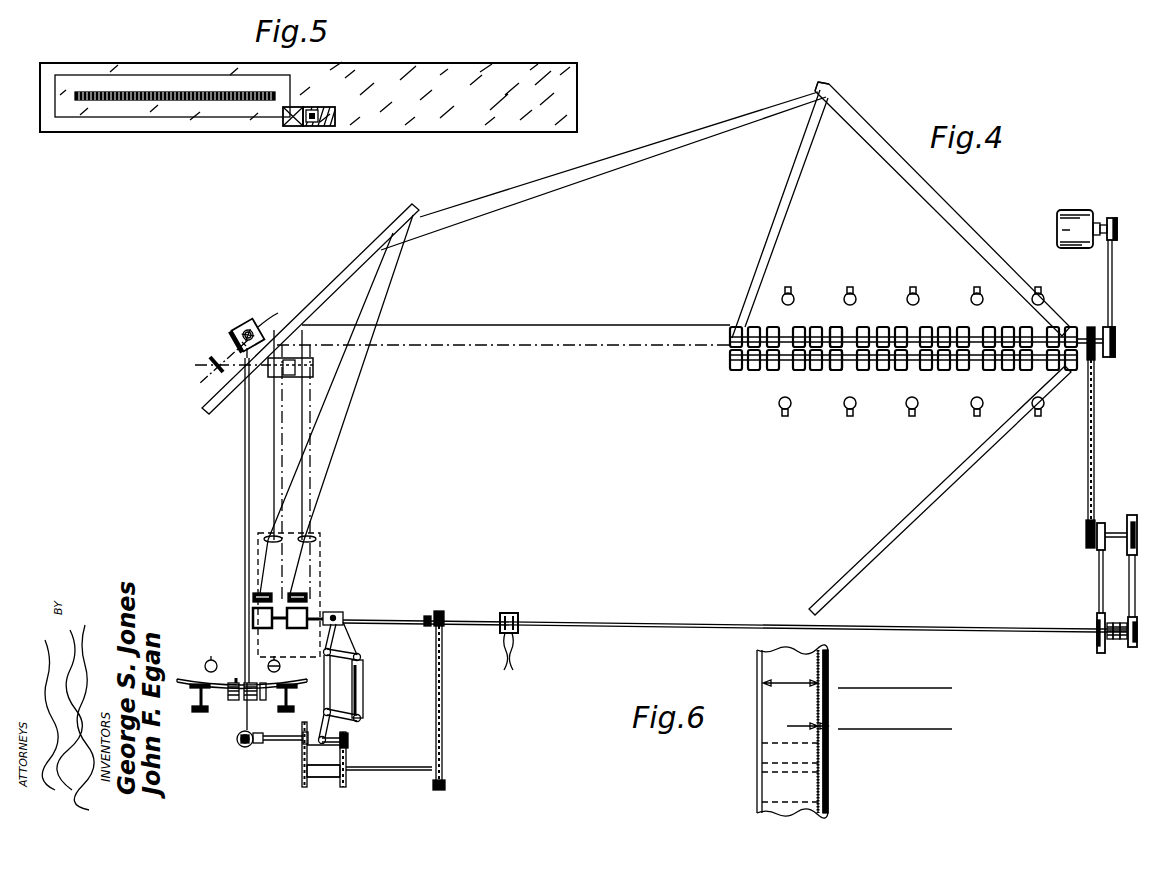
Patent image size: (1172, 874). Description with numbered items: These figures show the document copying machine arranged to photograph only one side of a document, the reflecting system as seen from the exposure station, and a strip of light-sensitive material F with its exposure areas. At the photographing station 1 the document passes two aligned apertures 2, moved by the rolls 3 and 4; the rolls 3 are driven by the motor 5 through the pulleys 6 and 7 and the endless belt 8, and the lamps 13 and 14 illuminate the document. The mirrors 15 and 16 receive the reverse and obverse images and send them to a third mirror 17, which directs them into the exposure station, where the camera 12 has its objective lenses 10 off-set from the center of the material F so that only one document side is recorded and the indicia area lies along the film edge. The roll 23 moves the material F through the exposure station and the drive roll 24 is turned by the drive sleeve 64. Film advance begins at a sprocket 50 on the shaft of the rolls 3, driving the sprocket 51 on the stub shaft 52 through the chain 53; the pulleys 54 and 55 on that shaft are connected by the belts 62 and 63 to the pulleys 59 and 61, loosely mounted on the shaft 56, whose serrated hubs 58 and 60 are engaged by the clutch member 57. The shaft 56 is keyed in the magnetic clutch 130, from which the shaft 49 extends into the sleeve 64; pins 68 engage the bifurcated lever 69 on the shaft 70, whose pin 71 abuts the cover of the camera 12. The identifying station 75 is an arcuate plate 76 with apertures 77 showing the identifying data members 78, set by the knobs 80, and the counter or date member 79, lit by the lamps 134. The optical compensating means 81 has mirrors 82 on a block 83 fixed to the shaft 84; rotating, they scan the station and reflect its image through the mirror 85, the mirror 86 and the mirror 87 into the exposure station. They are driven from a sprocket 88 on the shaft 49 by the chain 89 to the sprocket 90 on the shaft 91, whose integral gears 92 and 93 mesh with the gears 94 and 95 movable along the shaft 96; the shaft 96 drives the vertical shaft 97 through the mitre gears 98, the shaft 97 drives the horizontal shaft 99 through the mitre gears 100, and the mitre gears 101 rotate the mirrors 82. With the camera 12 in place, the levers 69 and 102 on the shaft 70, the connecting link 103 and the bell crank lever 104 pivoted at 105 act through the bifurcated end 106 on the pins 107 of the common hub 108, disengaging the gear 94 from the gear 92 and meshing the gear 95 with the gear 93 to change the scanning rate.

In FIG. 4, the photographing station 1 is at (877, 324).
In FIG. 5, the apertures 2 is at (112, 102).
In FIG. 4, the rolls 3 is at (832, 326).
In FIG. 4, the rolls 4 is at (836, 372).
In FIG. 4, the motor 5 is at (1057, 228).
In FIG. 4, the pulley 6 is at (1110, 218).
In FIG. 4, the pulley 7 is at (1117, 342).
In FIG. 4, the endless belt 8 is at (1108, 272).
In FIG. 4, the objective lenses 10 is at (310, 540).
In FIG. 4, the camera 12 is at (320, 572).
In FIG. 4, the lamps 13 is at (971, 300).
In FIG. 4, the lamps 14 is at (971, 404).
In FIG. 4, the mirror 15 is at (943, 480).
In FIG. 5, the mirror 16 is at (185, 117).
In FIG. 4, the mirror 16 is at (962, 230).
In FIG. 5, the third mirror 17 is at (450, 67).
In FIG. 4, the third mirror 17 is at (370, 252).
In FIG. 4, the roll 23 is at (307, 594).
In FIG. 4, the drive roll 24 is at (286, 628).
In FIG. 4, the shaft 49 is at (394, 620).
In FIG. 4, the sprocket 50 is at (1090, 327).
In FIG. 4, the sprocket 51 is at (1085, 550).
In FIG. 4, the stub shaft 52 is at (1120, 530).
In FIG. 4, the chain 53 is at (1088, 440).
In FIG. 4, the pulley 54 is at (1097, 558).
In FIG. 4, the pulley 55 is at (1136, 530).
In FIG. 4, the shaft 56 is at (1061, 632).
In FIG. 4, the clutch member 57 is at (1118, 642).
In FIG. 4, the serrated hub 58 is at (1110, 646).
In FIG. 4, the pulley 59 is at (1097, 654).
In FIG. 4, the serrated hub 60 is at (1124, 644).
In FIG. 4, the pulley 61 is at (1137, 633).
In FIG. 4, the belt 62 is at (1098, 605).
In FIG. 4, the belt 63 is at (1134, 593).
In FIG. 4, the drive sleeve 64 is at (333, 618).
In FIG. 4, the pins 68 is at (346, 622).
In FIG. 4, the bifurcated lever 69 is at (359, 655).
In FIG. 4, the shaft 70 is at (326, 664).
In FIG. 4, the pin 71 is at (320, 630).
In FIG. 4, the identifying station 75 is at (188, 674).
In FIG. 4, the arcuate plate 76 is at (334, 708).
In FIG. 4, the apertures 77 is at (236, 683).
In FIG. 4, the identifying data members 78 is at (290, 692).
In FIG. 4, the counter or date member 79 is at (232, 699).
In FIG. 4, the knobs 80 is at (284, 712).
In FIG. 4, the optical compensating means 81 is at (241, 317).
In FIG. 4, the mirrors 82 is at (268, 321).
In FIG. 4, the plate or block 83 is at (250, 321).
In FIG. 4, the shaft 84 is at (234, 328).
In FIG. 4, the mirror 85 is at (210, 372).
In FIG. 5, the mirror 86 is at (293, 124).
In FIG. 4, the mirror 86 is at (300, 376).
In FIG. 5, the mirror 87 is at (330, 126).
In FIG. 4, the mirror 87 is at (313, 366).
In FIG. 4, the sprocket 88 is at (440, 612).
In FIG. 4, the chain 89 is at (444, 716).
In FIG. 4, the sprocket 90 is at (446, 790).
In FIG. 4, the shaft 91 is at (392, 771).
In FIG. 4, the gear 92 is at (346, 784).
In FIG. 4, the gear 93 is at (305, 784).
In FIG. 4, the gear 94 is at (342, 740).
In FIG. 4, the gear 95 is at (304, 736).
In FIG. 4, the shaft 96 is at (274, 742).
In FIG. 4, the vertical shaft 97 is at (246, 745).
In FIG. 4, the mitre gears 98 is at (240, 744).
In FIG. 4, the horizontal shaft 99 is at (245, 487).
In FIG. 4, the mitre gears 100 is at (236, 740).
In FIG. 4, the mitre gears 101 is at (238, 342).
In FIG. 4, the lever 102 is at (363, 674).
In FIG. 4, the connecting link 103 is at (363, 692).
In FIG. 4, the bell crank lever 104 is at (363, 714).
In FIG. 4, the pivot 105 is at (327, 730).
In FIG. 4, the bifurcated end 106 is at (348, 743).
In FIG. 4, the pins 107 is at (324, 776).
In FIG. 4, the common hub 108 is at (288, 702).
In FIG. 4, the magnetic clutch 130 is at (520, 614).
In FIG. 4, the lamps 134 is at (280, 666).
In FIG. 6, the light-sensitive material F is at (767, 755).